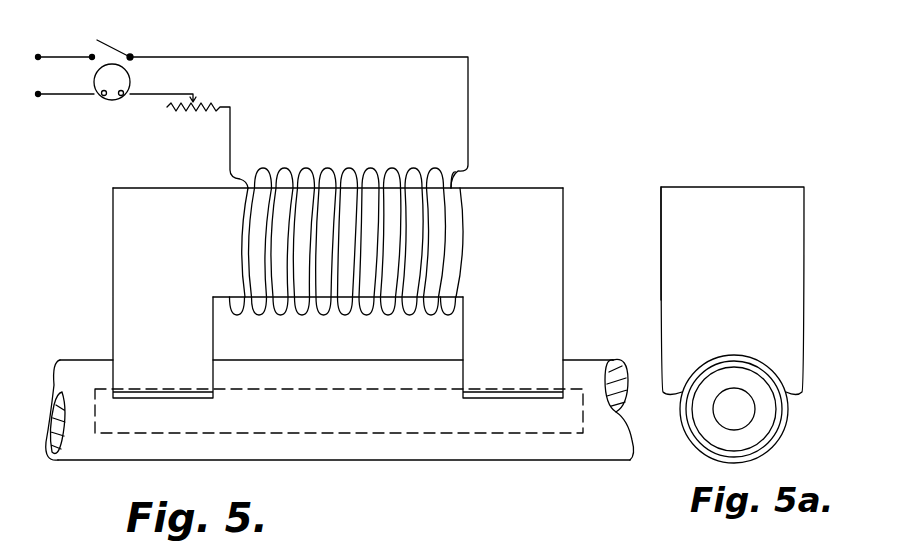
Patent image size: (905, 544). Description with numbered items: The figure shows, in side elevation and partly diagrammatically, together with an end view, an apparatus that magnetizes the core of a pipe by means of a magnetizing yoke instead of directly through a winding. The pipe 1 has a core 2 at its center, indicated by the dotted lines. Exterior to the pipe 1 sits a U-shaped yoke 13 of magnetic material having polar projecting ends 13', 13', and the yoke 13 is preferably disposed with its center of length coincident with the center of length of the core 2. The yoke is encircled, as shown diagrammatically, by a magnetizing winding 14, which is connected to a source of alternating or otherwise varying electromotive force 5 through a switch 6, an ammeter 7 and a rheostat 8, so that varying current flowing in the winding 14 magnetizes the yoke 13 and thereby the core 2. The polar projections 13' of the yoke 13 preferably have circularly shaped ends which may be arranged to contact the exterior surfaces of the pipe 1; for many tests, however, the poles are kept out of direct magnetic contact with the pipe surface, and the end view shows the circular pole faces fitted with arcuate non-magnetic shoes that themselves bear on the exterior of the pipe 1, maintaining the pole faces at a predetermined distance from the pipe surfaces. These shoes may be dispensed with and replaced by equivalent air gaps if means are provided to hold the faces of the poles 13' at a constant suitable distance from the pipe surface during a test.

In FIG. 5, the pipe 1 is at (478, 460).
In FIG. 5A, the pipe 1 is at (772, 446).
In FIG. 5, the core 2 is at (367, 433).
In FIG. 5A, the core 2 is at (718, 418).
In FIG. 5, the source of alternating or otherwise varying electromotive force 5 is at (44, 70).
In FIG. 5, the switch 6 is at (104, 45).
In FIG. 5, the ammeter 7 is at (104, 100).
In FIG. 5, the rheostat 8 is at (213, 100).
In FIG. 5, the U-shaped yoke 13 is at (338, 222).
In FIG. 5, the polar projecting ends 13' is at (336, 293).
In FIG. 5A, the polar projecting ends 13' is at (640, 243).
In FIG. 5, the magnetizing winding 14 is at (333, 170).